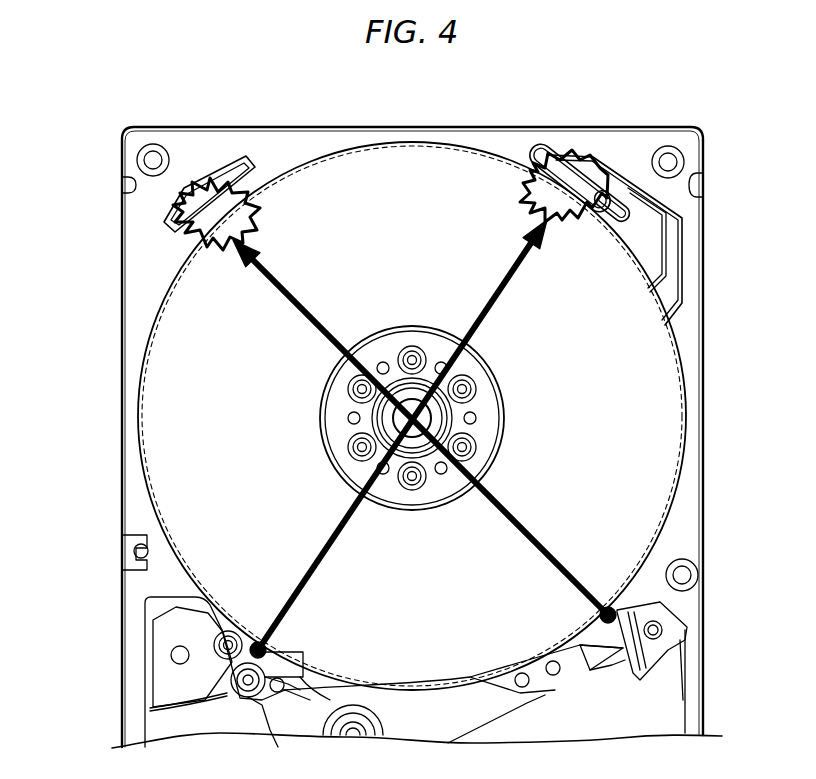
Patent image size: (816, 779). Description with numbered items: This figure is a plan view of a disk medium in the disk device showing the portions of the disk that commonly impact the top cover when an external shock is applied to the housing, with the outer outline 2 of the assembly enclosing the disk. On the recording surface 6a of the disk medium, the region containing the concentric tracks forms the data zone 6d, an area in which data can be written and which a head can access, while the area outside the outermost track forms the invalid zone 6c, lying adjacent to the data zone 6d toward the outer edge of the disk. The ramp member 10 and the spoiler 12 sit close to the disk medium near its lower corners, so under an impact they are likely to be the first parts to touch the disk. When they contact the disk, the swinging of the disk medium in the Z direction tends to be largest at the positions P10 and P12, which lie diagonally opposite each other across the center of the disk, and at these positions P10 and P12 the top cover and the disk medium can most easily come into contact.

The magnetic disk 2 is at (497, 143).
The recording surface 6a is at (70, 320).
The invalid zone 6c is at (137, 374).
The data zone 6d is at (185, 335).
The ramp member 10 is at (621, 607).
The spoiler 12 is at (292, 660).
The position P10 is at (258, 230).
The position P12 is at (523, 204).